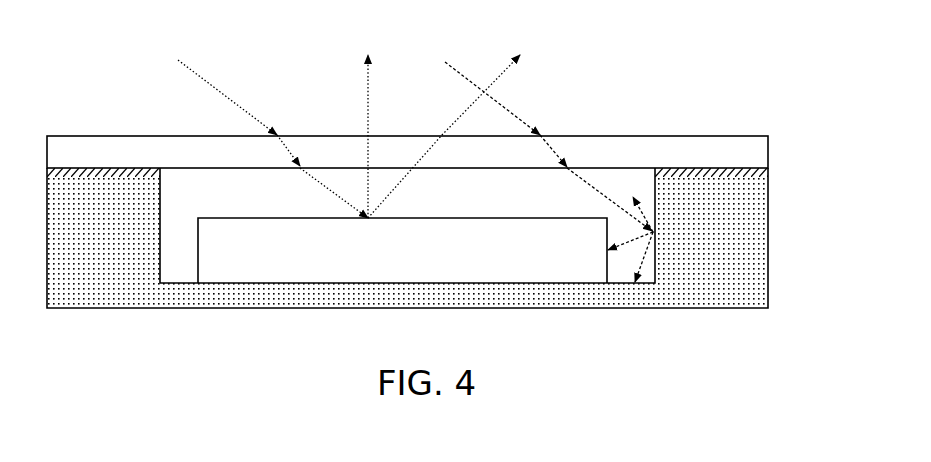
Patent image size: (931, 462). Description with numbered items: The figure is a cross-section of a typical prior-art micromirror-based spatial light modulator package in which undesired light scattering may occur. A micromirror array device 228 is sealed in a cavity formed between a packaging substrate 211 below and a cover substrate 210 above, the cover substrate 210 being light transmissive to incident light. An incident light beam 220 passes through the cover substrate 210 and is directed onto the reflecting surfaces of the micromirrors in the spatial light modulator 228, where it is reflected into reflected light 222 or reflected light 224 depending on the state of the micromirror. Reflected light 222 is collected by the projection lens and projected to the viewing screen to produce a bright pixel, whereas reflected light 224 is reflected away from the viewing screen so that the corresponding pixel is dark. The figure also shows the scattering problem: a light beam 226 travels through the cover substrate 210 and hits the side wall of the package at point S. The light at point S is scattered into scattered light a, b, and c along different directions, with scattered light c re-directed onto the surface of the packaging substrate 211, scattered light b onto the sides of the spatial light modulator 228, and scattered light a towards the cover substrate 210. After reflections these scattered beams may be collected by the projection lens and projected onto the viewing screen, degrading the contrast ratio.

The cover substrate 210 is at (653, 143).
The packaging substrate 211 is at (590, 300).
The incident light beam 220 is at (210, 82).
The reflected light 222 is at (367, 82).
The reflected light 224 is at (503, 67).
The light beam 226 is at (460, 70).
The micromirror array device 228 is at (465, 228).
The scattered light a is at (635, 202).
The scattered light b is at (630, 237).
The scattered light c is at (638, 257).
The point S is at (665, 233).